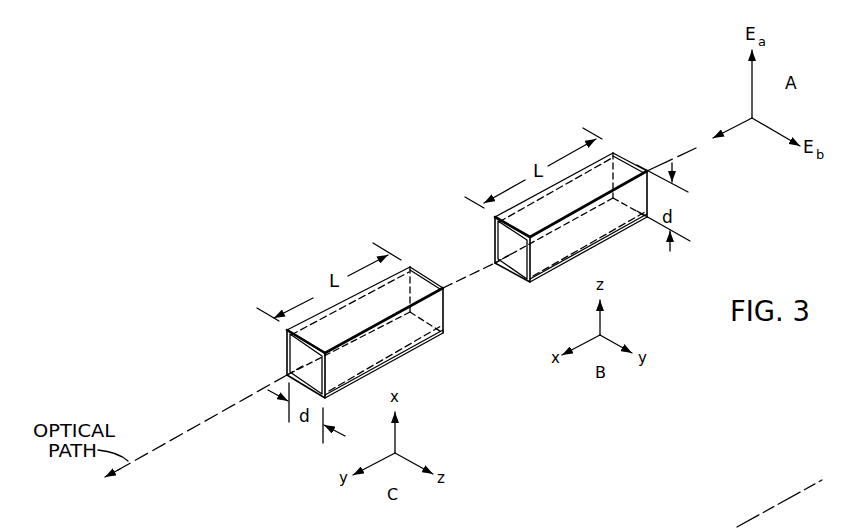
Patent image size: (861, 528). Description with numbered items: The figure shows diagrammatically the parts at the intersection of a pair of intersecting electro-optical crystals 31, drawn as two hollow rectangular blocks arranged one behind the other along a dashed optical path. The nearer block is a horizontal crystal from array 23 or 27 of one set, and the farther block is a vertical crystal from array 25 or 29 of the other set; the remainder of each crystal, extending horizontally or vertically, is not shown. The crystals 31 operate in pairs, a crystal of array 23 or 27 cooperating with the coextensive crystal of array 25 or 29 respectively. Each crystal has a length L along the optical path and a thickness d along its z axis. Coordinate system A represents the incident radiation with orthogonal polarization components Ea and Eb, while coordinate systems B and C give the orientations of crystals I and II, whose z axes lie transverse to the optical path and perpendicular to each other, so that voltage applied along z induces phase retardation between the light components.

The array of crystals 23 is at (265, 249).
The array of crystals 27 is at (332, 249).
The array of crystals 25 is at (490, 130).
The array of crystals 29 is at (557, 130).
The crystals 31 is at (414, 333).